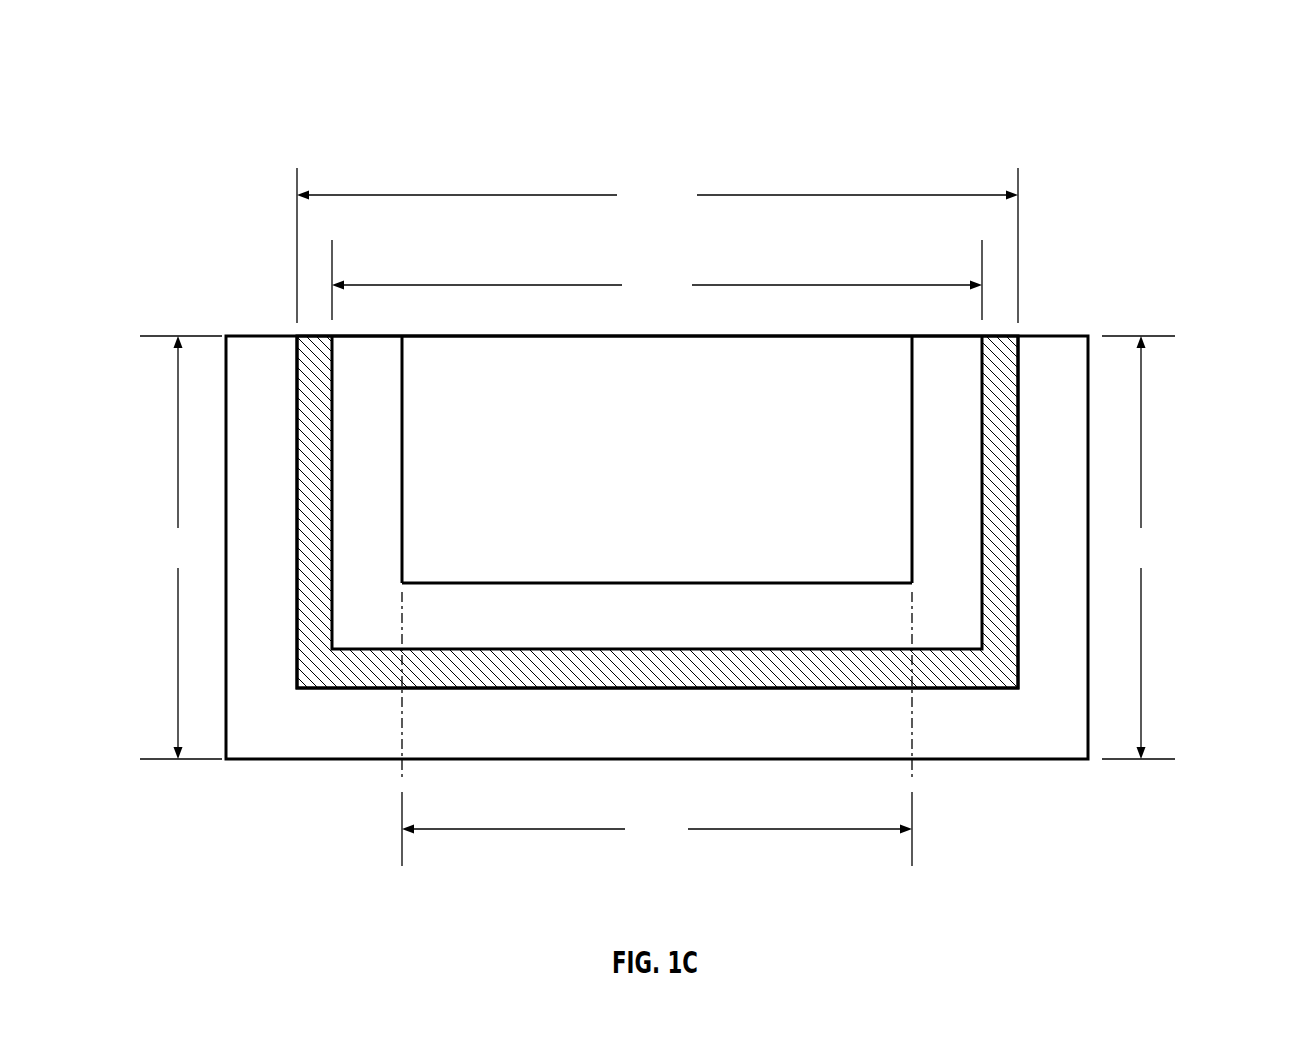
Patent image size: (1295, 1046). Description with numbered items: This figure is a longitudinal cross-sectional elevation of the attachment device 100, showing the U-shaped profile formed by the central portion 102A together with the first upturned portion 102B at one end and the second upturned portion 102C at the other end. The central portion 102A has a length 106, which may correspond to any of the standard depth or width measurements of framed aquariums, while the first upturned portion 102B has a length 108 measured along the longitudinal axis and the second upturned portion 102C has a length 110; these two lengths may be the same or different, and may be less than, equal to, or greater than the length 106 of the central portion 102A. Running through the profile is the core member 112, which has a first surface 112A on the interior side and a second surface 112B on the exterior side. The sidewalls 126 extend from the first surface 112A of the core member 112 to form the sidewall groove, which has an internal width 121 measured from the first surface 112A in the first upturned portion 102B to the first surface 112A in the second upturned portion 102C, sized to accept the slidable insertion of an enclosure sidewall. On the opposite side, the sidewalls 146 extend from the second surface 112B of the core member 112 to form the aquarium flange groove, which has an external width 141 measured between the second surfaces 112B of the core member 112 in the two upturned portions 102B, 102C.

The attachment device 100 is at (1197, 82).
The central portion 102A is at (632, 571).
The first upturned portion 102B is at (417, 397).
The second upturned portion 102C is at (897, 397).
The length of the central portion 106 is at (657, 729).
The length of the first upturned portion 108 is at (181, 547).
The length of the second upturned portion 110 is at (1138, 547).
The core member 112 is at (673, 682).
The first surface of the core member 112A is at (347, 493).
The second surface of the core member 112B is at (290, 364).
The internal width 121 is at (657, 280).
The sidewalls 126 is at (673, 632).
The external width 141 is at (657, 245).
The sidewalls 146 is at (673, 737).